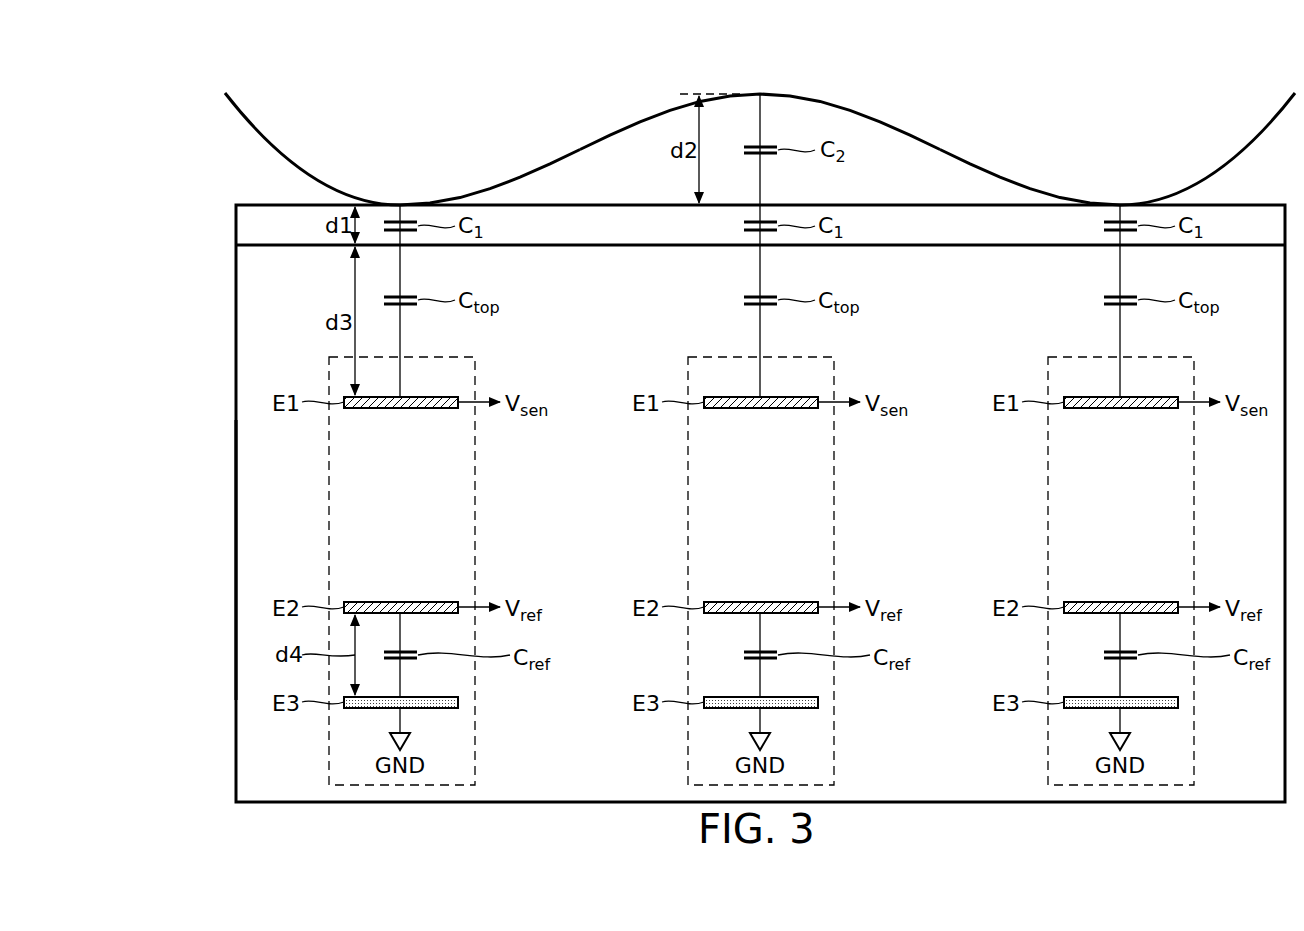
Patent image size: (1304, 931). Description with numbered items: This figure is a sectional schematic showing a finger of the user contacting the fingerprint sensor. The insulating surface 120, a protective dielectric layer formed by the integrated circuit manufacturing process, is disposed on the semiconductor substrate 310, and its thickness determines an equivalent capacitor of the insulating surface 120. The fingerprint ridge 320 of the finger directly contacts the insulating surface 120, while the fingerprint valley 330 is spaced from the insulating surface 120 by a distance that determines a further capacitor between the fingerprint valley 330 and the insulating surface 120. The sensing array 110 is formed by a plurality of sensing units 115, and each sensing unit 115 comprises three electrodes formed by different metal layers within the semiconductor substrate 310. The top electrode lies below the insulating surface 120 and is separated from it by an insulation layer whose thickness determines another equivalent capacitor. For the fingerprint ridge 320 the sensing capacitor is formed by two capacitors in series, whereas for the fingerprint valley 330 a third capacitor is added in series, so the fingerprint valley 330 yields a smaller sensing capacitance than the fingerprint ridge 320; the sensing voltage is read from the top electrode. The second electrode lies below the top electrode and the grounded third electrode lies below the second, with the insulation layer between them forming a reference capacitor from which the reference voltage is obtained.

The sensing array 110 is at (220, 385).
The sensing unit 115 is at (329, 522).
The insulating surface 120 is at (236, 226).
The semiconductor substrate 310 is at (236, 523).
The fingerprint ridge 320 is at (400, 192).
The fingerprint valley 330 is at (760, 88).